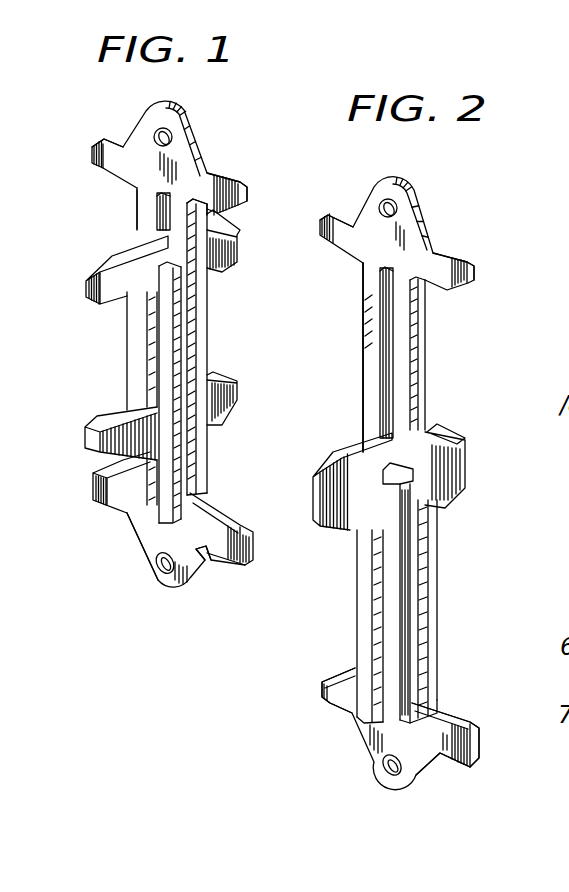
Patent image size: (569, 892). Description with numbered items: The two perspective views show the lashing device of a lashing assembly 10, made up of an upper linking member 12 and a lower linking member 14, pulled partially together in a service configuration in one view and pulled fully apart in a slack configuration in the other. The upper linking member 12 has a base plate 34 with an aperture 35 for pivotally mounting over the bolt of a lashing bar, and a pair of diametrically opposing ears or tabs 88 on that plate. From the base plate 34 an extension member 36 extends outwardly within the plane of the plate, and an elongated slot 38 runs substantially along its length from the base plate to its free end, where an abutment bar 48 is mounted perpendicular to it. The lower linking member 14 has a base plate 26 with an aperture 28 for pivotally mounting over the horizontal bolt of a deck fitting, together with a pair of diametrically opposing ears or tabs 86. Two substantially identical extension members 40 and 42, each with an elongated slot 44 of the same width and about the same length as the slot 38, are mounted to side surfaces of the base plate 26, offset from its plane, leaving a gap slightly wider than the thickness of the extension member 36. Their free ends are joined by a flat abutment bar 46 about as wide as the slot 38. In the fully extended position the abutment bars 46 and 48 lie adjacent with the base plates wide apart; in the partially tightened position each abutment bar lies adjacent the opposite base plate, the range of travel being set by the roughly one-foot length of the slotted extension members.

In FIG. 1, the lashing assembly 10 is at (126, 586).
In FIG. 2, the lashing assembly 10 is at (438, 203).
In FIG. 1, the upper linking member 12 is at (126, 214).
In FIG. 1, the lower linking member 14 is at (125, 553).
In FIG. 2, the lower linking member 14 is at (444, 599).
In FIG. 1, the base plate 26 is at (192, 550).
In FIG. 2, the base plate 26 is at (422, 748).
In FIG. 1, the aperture 28 is at (165, 590).
In FIG. 2, the aperture 28 is at (383, 765).
In FIG. 1, the base plate 34 is at (190, 158).
In FIG. 2, the base plate 34 is at (407, 237).
In FIG. 1, the aperture 35 is at (153, 130).
In FIG. 2, the aperture 35 is at (382, 203).
In FIG. 1, the extension member 36 is at (200, 213).
In FIG. 2, the extension member 36 is at (365, 355).
In FIG. 1, the elongated slot 38 is at (157, 221).
In FIG. 2, the elongated slot 38 is at (390, 377).
In FIG. 1, the extension member 40 is at (207, 453).
In FIG. 2, the extension member 40 is at (428, 628).
In FIG. 1, the extension member 42 is at (180, 477).
In FIG. 2, the extension member 42 is at (410, 665).
In FIG. 1, the elongated slots 44 is at (146, 350).
In FIG. 2, the elongated slots 44 is at (370, 583).
In FIG. 1, the abutment bar 46 is at (222, 262).
In FIG. 2, the abutment bar 46 is at (448, 440).
In FIG. 1, the abutment bar 48 is at (227, 408).
In FIG. 2, the abutment bar 48 is at (453, 473).
In FIG. 1, the ears or tabs 86 is at (95, 167).
In FIG. 2, the ears or tabs 86 is at (452, 253).
In FIG. 1, the ears or tabs 88 is at (95, 488).
In FIG. 2, the ears or tabs 88 is at (322, 683).